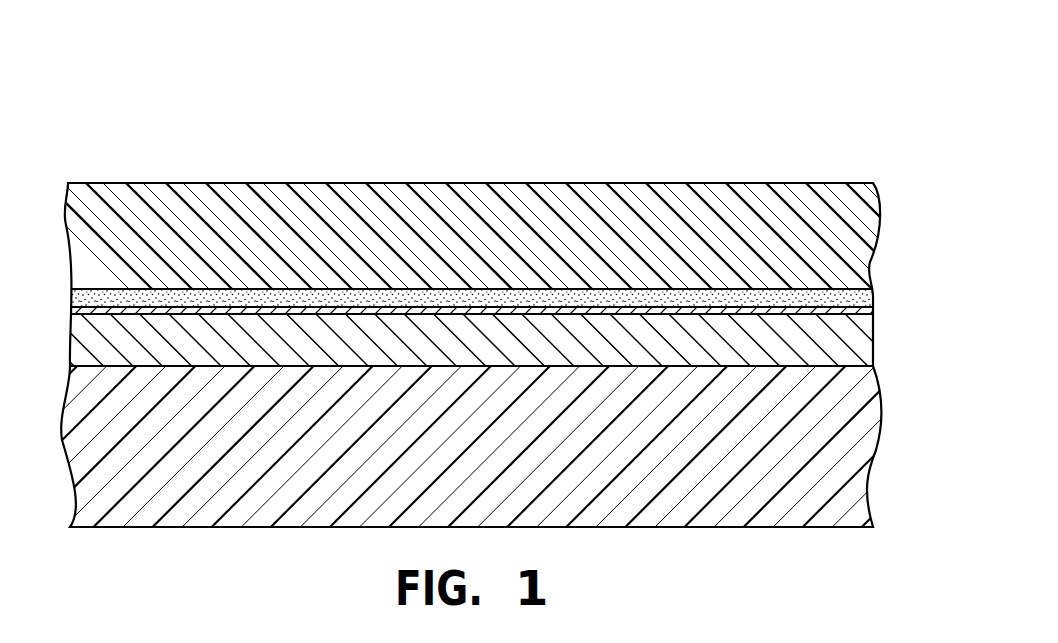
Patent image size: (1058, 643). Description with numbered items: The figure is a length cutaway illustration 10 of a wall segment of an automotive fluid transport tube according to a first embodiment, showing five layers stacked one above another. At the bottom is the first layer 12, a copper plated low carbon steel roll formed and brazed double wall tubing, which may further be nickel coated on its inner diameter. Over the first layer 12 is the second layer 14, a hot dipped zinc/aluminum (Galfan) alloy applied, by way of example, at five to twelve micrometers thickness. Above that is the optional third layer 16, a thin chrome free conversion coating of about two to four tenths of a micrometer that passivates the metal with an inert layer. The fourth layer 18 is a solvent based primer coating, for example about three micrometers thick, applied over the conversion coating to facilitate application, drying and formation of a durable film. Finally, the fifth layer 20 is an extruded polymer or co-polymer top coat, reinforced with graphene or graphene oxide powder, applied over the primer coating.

The length cutaway illustration of a wall segment of an automotive fluid transport t 10 is at (526, 270).
The first layer 12 is at (881, 435).
The second layer 14 is at (876, 355).
The third layer 16 is at (67, 312).
The fourth layer 18 is at (879, 299).
The fifth layer 20 is at (883, 206).